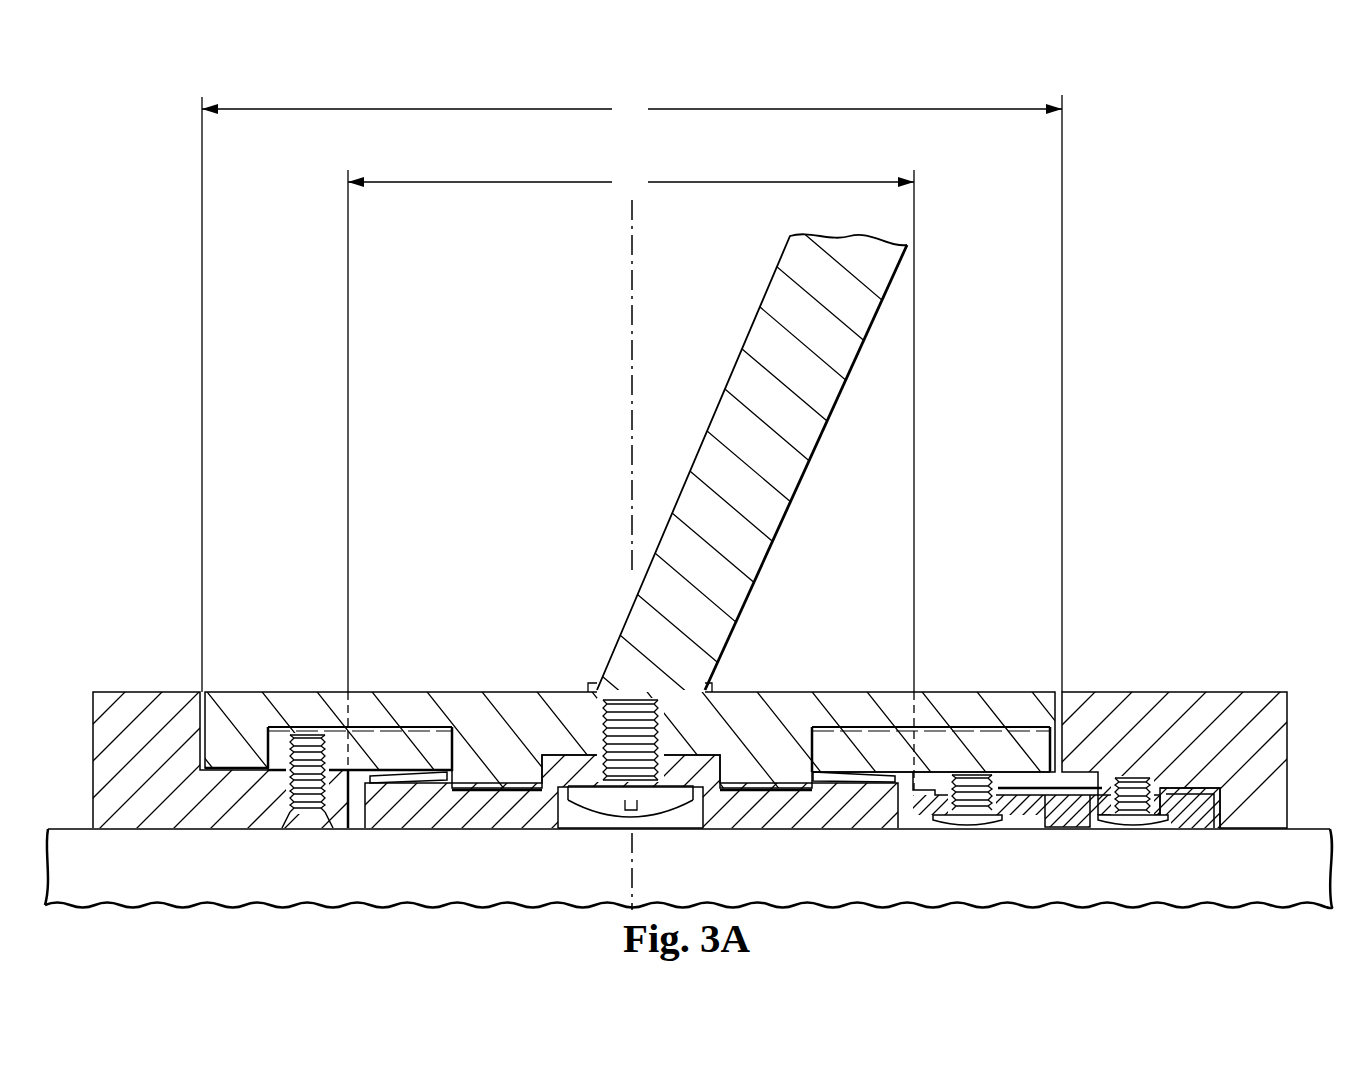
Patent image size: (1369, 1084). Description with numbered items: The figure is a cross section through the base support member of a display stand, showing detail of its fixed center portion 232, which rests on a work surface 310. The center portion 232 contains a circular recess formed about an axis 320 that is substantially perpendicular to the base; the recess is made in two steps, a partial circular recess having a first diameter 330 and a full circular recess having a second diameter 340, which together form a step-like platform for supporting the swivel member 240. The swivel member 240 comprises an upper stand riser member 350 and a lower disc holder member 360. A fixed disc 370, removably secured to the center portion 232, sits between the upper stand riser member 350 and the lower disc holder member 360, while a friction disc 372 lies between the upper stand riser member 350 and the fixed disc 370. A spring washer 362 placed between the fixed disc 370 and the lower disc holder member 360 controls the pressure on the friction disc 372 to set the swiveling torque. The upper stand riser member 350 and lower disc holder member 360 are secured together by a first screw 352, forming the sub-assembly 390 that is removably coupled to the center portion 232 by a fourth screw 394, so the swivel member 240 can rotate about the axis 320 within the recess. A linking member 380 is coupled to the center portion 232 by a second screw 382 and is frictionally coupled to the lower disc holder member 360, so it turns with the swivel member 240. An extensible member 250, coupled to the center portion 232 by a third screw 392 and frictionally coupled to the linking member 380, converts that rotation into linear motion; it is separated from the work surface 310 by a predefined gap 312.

The center portion 232 is at (137, 705).
The swivel member 240 is at (426, 470).
The extensible member 250 is at (1065, 800).
The work surface 310 is at (567, 818).
The predefined gap 312 is at (1212, 812).
The axis 320 is at (631, 422).
The diameter D1 330 is at (433, 107).
The diameter D2 340 is at (518, 180).
The upper stand riser member 350 is at (628, 628).
The screw S1 352 is at (668, 806).
The lower disc holder member 360 is at (523, 813).
The spring washer SW 362 is at (408, 785).
The fixed disc 370 is at (428, 735).
The friction disc 372 is at (380, 690).
The linking member 380 is at (916, 812).
The screw S2 382 is at (987, 826).
The sub-assembly 390 is at (724, 364).
The screw S3 392 is at (1135, 820).
The screw S4 394 is at (303, 822).